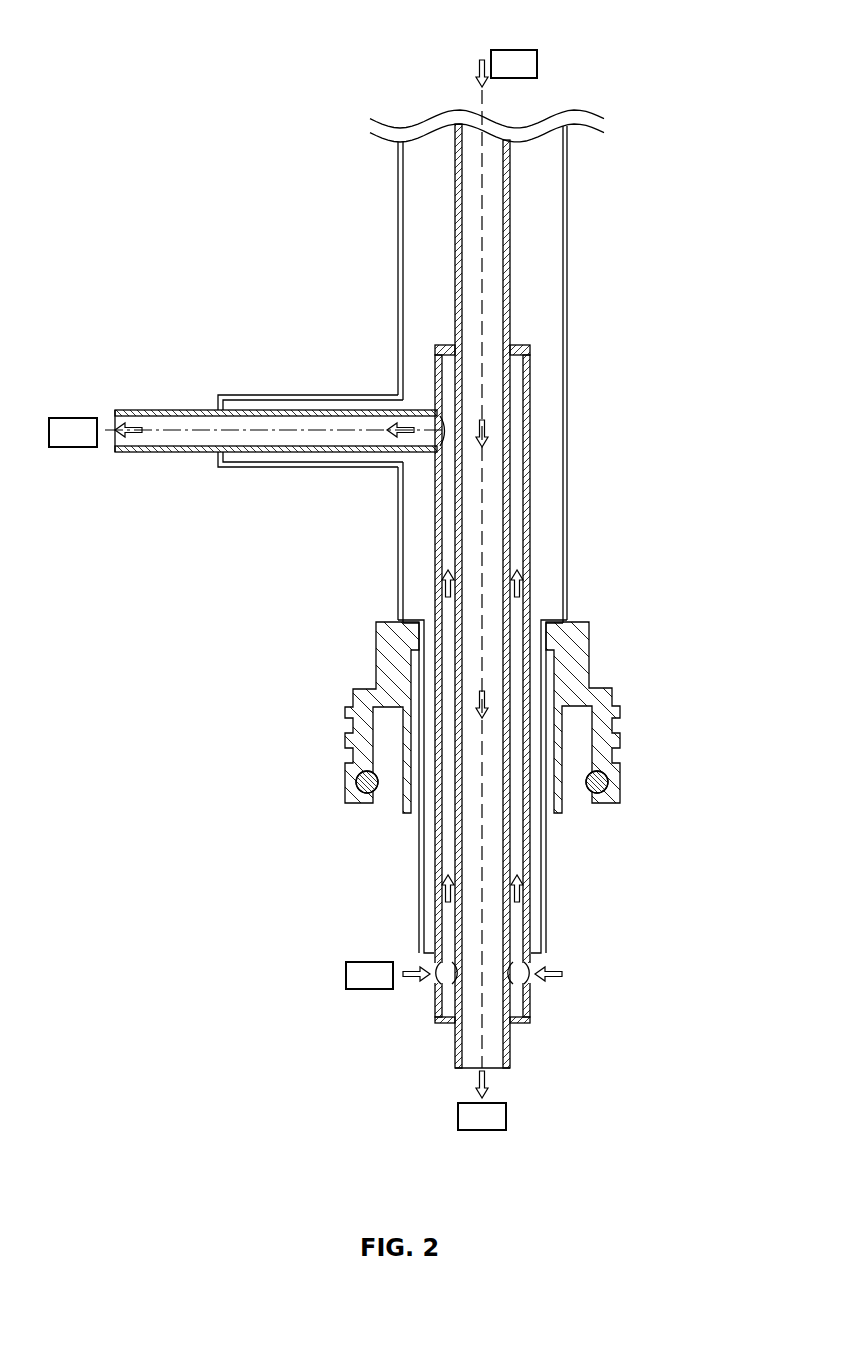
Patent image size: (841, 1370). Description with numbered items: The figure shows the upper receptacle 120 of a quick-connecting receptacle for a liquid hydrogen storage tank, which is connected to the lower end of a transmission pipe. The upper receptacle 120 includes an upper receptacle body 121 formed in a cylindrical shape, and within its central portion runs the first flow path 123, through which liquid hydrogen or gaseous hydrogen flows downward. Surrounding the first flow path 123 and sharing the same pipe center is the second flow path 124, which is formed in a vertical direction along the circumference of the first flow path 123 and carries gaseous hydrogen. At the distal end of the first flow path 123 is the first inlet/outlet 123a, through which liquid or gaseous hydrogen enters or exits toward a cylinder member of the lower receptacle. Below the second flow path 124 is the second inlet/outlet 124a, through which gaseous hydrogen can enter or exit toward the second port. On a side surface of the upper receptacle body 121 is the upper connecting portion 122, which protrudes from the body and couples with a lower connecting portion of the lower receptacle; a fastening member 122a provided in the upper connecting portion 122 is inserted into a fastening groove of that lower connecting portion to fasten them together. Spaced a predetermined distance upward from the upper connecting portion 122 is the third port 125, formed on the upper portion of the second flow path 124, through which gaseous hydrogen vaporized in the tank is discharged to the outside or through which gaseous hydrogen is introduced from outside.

The upper receptacle 120 is at (587, 343).
The upper receptacle body 121 is at (563, 515).
The upper connecting portion 122 is at (573, 655).
The fastening member 122a is at (352, 782).
The first flow path 123 is at (490, 460).
The first inlet/outlet 123a is at (472, 1062).
The second flow path 124 is at (447, 528).
The second inlet/outlet 124a is at (433, 982).
The third port 125 is at (173, 410).